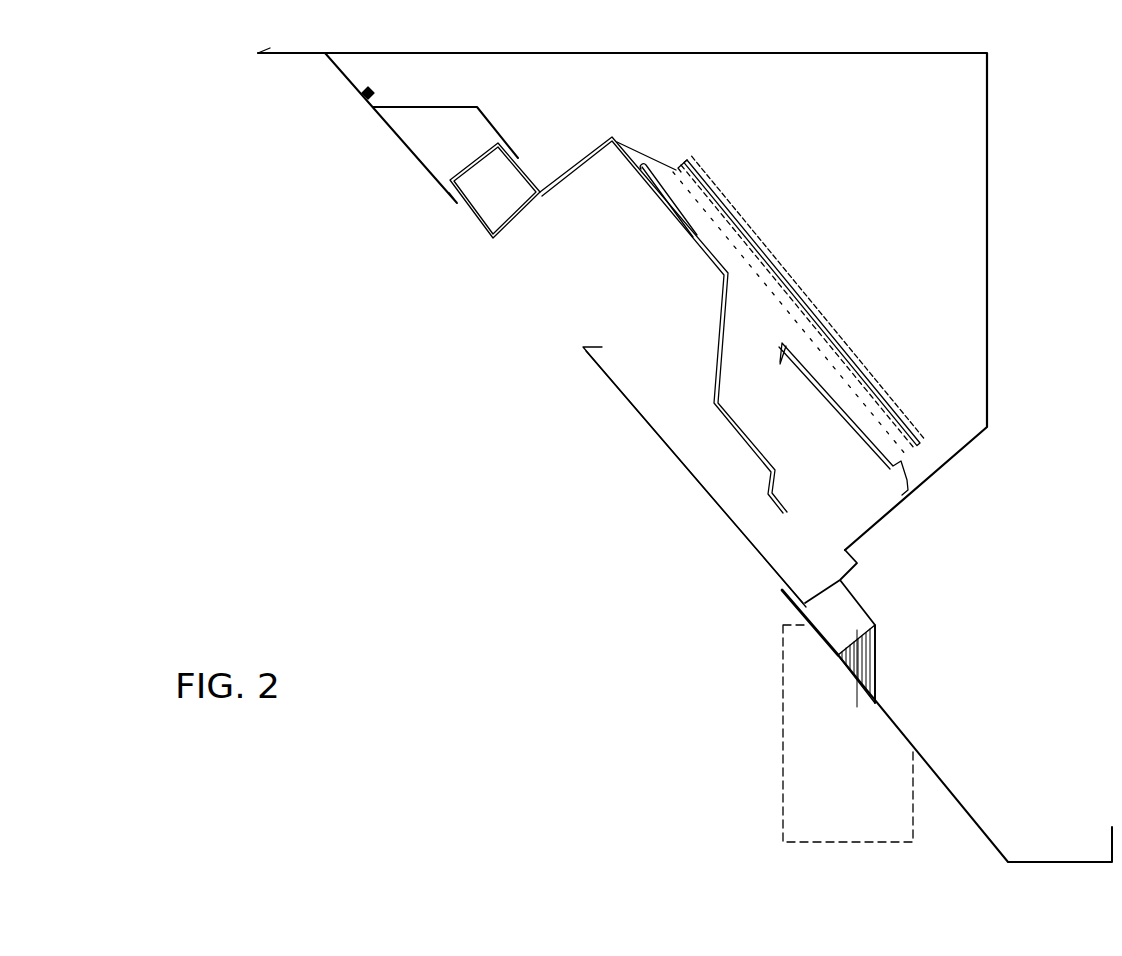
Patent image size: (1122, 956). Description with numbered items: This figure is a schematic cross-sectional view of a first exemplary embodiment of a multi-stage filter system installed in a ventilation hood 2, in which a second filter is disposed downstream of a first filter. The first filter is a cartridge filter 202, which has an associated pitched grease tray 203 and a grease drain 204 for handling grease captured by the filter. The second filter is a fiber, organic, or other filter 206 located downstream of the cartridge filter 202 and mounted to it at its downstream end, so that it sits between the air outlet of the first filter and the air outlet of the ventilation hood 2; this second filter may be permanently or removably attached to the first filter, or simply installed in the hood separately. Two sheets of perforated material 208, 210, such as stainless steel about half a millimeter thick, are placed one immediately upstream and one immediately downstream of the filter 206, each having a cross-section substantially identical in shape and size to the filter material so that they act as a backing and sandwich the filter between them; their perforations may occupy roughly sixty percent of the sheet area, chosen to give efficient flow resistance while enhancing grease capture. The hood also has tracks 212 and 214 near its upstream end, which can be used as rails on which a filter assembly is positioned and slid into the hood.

The ventilation hood 2 is at (1016, 105).
The cartridge filter 202 is at (653, 432).
The pitched grease tray 203 is at (858, 582).
The grease drain 204 is at (879, 667).
The filter 206 is at (730, 198).
The sheet of perforated material 208 is at (845, 355).
The sheet of perforated material 210 is at (795, 310).
The track 212 is at (383, 129).
The track 214 is at (982, 828).